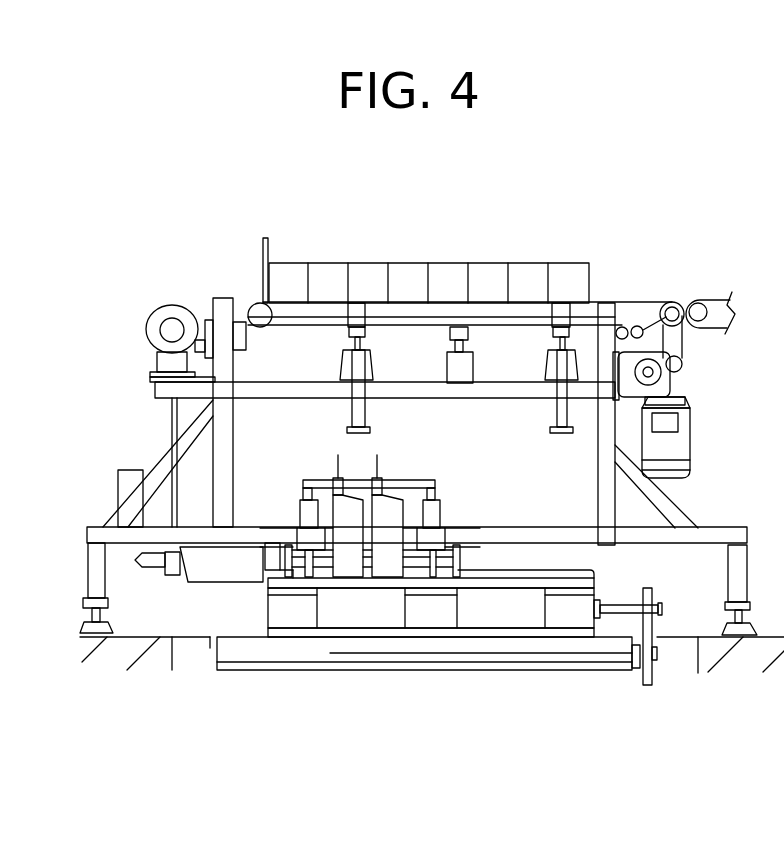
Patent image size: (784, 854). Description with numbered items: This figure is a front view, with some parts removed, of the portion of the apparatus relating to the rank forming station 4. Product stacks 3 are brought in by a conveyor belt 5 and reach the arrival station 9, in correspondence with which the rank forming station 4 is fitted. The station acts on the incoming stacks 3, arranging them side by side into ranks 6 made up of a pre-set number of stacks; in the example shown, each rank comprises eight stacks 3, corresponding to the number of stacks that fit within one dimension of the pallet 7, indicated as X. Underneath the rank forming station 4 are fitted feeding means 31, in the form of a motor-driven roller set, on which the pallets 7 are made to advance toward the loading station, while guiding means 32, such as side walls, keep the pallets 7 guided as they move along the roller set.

The stack 3 is at (289, 272).
The rank forming station 4 is at (236, 208).
The conveyor belt 5 is at (711, 283).
The rank 6 is at (426, 220).
The pallet 7 is at (290, 613).
The arrival station 9 is at (591, 246).
The feeding means 31 is at (433, 658).
The guiding means 32 is at (614, 581).